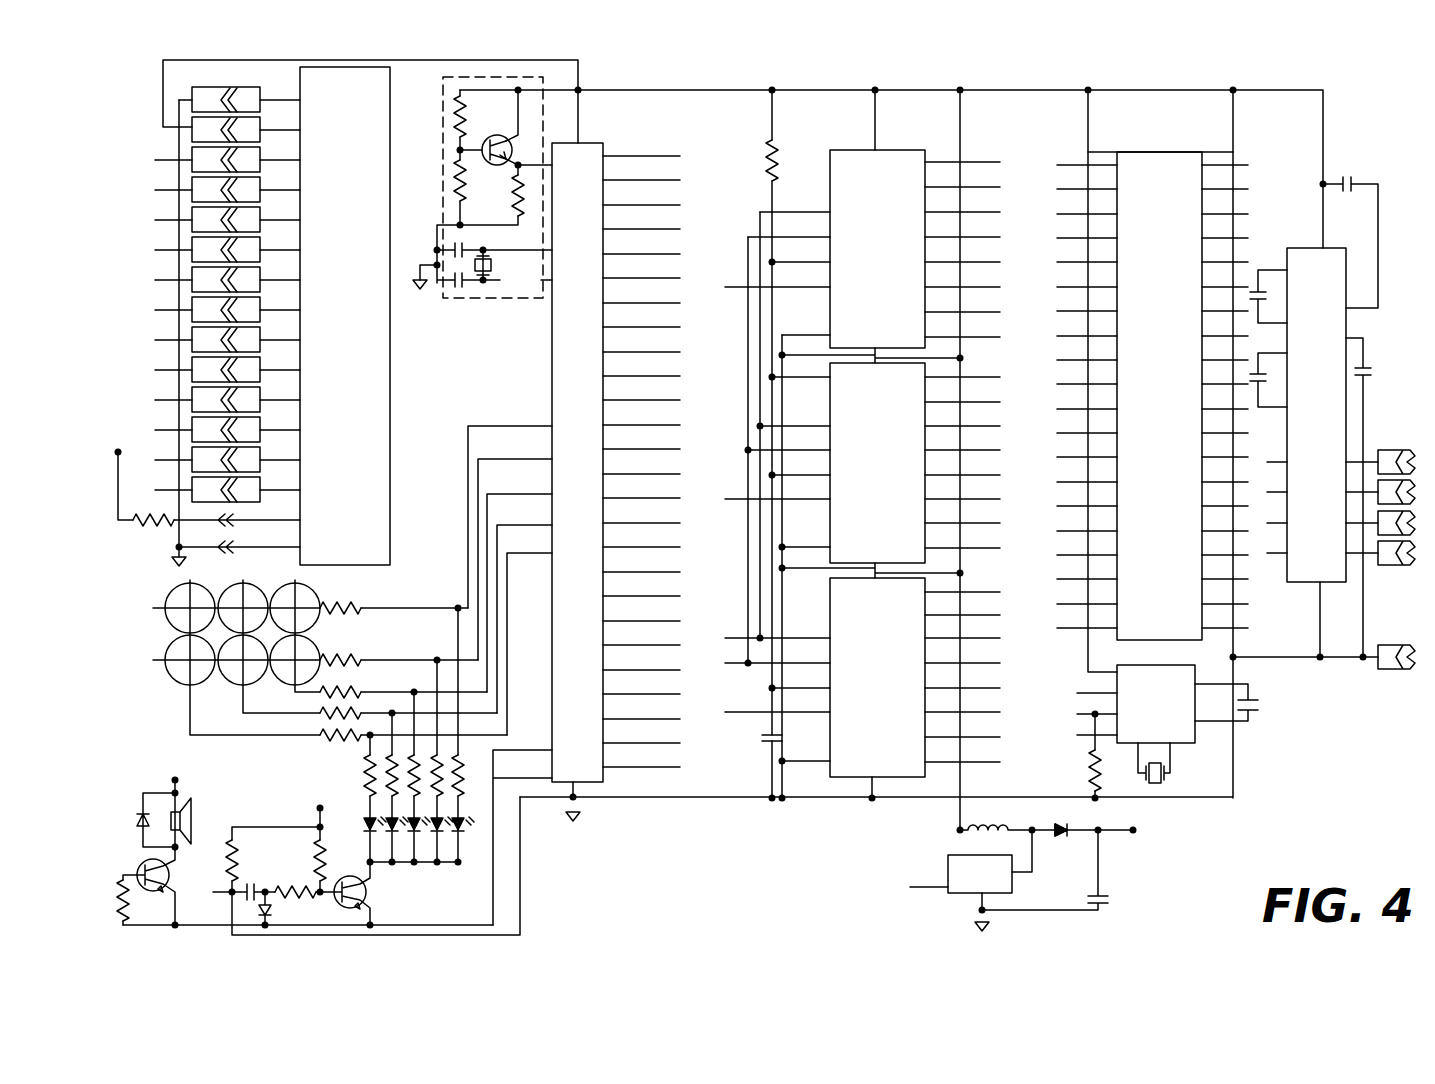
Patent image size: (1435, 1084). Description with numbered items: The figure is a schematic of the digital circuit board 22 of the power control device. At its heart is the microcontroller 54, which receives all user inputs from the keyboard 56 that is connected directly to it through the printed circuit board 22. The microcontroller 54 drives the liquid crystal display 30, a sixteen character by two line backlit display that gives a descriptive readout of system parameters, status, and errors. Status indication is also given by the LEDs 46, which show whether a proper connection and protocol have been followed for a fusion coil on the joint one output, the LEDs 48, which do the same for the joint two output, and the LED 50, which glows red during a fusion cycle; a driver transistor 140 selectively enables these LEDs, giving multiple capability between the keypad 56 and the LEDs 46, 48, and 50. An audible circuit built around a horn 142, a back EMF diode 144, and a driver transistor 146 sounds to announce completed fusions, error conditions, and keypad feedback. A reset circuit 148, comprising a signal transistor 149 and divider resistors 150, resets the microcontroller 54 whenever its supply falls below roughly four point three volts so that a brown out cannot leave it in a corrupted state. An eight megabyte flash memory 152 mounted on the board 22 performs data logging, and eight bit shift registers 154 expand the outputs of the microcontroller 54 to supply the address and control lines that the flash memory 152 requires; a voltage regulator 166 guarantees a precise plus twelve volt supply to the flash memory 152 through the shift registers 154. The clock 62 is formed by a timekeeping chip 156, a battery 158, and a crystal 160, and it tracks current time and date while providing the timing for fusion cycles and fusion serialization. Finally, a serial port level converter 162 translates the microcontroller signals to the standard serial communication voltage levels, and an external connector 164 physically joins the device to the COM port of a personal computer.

The digital circuit board 22 is at (660, 847).
The liquid crystal display 30 is at (373, 372).
The LEDs 46 is at (401, 752).
The LEDs 48 is at (457, 833).
The LED 50 is at (416, 835).
The microcontroller 54 is at (580, 143).
The keyboard 56 is at (152, 590).
The clock 62 is at (1191, 739).
The driver transistor 140 is at (365, 898).
The audible transducer or horn 142 is at (191, 802).
The back EMF diode 144 is at (143, 812).
The driver transistor 146 is at (171, 872).
The reset circuit 148 is at (483, 187).
The signal transistor 149 is at (507, 140).
The divider resistors 150 is at (463, 183).
The flash memory 152 is at (1142, 152).
The eight bit shift registers 154 is at (892, 152).
The timekeeping chip 156 is at (1177, 672).
The battery 158 is at (1258, 700).
The crystal 160 is at (1153, 787).
The RS-232 converter 162 is at (1312, 248).
The external connector 164 is at (1412, 565).
The voltage regulator 166 is at (1088, 884).